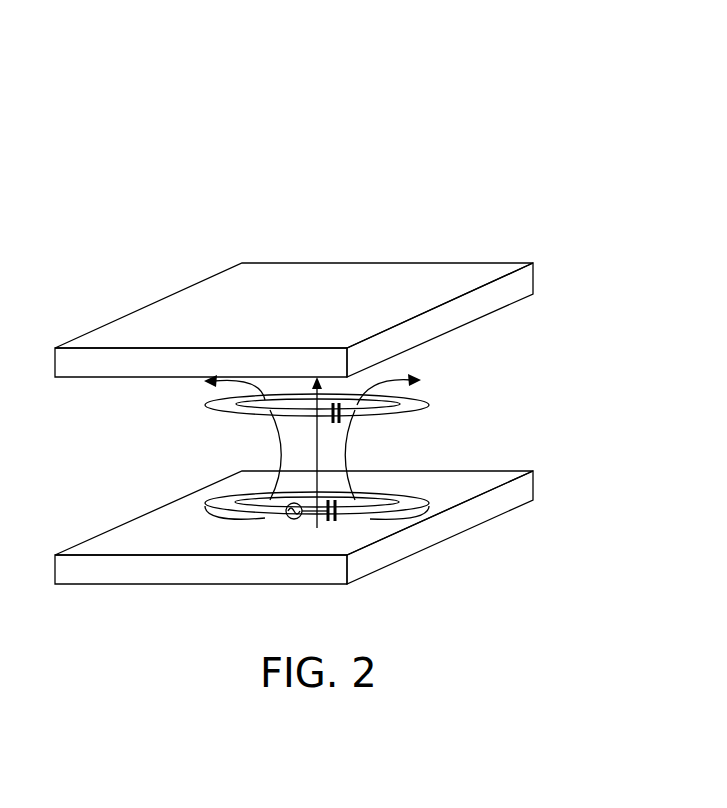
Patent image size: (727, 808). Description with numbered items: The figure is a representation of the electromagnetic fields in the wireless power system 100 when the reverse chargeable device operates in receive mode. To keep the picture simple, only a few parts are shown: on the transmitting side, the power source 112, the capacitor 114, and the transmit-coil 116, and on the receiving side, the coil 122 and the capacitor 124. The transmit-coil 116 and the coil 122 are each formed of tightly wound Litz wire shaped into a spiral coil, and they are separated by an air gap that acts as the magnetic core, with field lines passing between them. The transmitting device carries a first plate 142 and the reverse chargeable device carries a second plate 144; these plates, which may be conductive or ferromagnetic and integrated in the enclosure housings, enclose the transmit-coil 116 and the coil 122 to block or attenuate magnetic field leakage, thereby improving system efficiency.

The wireless power system 100 is at (556, 177).
The power source 112 is at (289, 518).
The capacitor 114 is at (339, 521).
The transmit-coil 116 is at (207, 506).
The coil 122 is at (229, 411).
The capacitor 124 is at (341, 423).
The first plate 142 is at (170, 584).
The second plate 144 is at (298, 264).